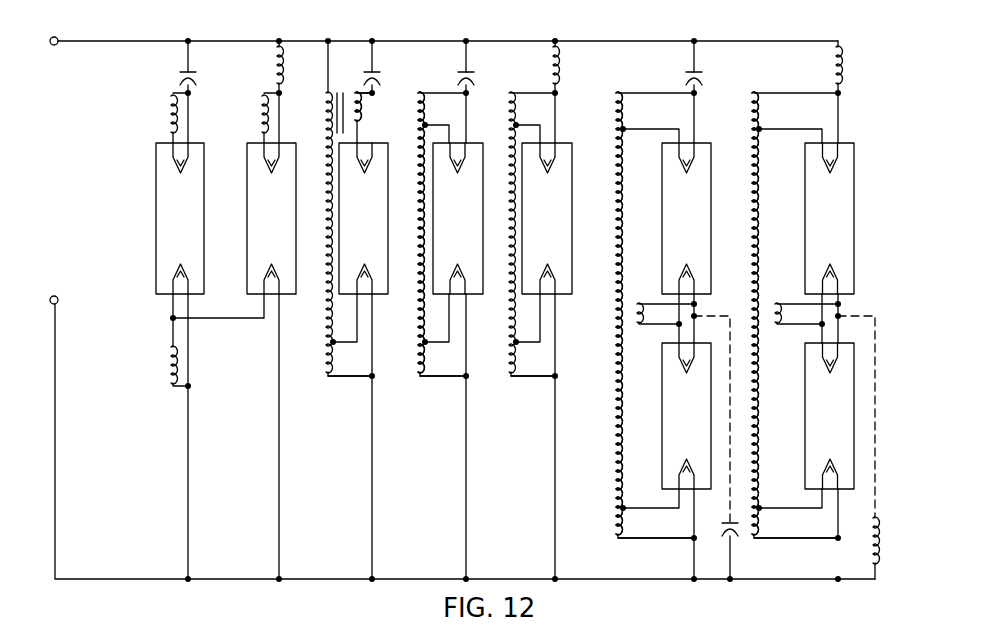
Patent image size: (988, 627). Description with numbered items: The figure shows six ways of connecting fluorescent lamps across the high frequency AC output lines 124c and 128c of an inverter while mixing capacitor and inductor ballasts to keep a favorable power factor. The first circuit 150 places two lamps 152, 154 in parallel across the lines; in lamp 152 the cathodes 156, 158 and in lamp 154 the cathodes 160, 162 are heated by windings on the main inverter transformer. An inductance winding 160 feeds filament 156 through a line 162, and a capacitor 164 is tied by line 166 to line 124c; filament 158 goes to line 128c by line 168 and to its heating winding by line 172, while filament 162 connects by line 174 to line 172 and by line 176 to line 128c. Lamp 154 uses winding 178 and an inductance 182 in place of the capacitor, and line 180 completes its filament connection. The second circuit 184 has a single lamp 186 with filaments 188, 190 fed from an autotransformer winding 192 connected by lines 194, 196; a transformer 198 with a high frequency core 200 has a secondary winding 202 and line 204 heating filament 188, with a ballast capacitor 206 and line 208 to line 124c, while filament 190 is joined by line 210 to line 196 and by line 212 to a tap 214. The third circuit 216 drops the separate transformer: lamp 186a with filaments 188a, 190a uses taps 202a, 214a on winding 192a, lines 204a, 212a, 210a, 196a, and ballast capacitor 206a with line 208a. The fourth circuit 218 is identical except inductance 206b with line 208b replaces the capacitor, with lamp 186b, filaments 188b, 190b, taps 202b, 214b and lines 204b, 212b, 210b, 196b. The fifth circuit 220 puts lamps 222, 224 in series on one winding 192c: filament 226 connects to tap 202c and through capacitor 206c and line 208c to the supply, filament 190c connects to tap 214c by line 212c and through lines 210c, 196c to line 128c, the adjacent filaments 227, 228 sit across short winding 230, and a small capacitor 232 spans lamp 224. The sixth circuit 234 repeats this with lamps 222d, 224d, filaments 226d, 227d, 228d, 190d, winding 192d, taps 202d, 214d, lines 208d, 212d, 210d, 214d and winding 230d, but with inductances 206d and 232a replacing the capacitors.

The high frequency AC output line 124c is at (95, 41).
The high frequency AC output line 128c is at (148, 579).
The first circuit 150 is at (238, 585).
The fluorescent lamp 152 is at (156, 197).
The fluorescent lamp 154 is at (247, 225).
The cathode 156 is at (183, 174).
The cathode 158 is at (192, 256).
The inductance winding 160 is at (168, 112).
The line 162 is at (192, 110).
The capacitor 164 is at (188, 77).
The line 166 is at (188, 57).
The line 168 is at (188, 458).
The line 172 is at (170, 317).
The line 174 is at (206, 320).
The line 176 is at (279, 405).
The winding 178 is at (261, 106).
The conductor 180 is at (284, 106).
The inductance 182 is at (280, 70).
The second circuit 184 is at (358, 497).
The fluorescent lamp 186 is at (381, 226).
The filament 188 is at (378, 190).
The filament 190 is at (378, 252).
The autotransformer winding 192 is at (332, 320).
The line 194 is at (326, 40).
The line 196 is at (372, 484).
The transformer 198 is at (339, 70).
The high frequency core 200 is at (345, 90).
The winding 202 is at (361, 97).
The line 204 is at (362, 112).
The ballast capacitor 206 is at (377, 73).
The line 208 is at (376, 55).
The line 210 is at (373, 352).
The line 212 is at (357, 319).
The tap 214 is at (345, 378).
The third circuit 216 is at (452, 497).
The line 208a is at (469, 55).
The ballast capacitor 206a is at (470, 72).
The line 204a is at (469, 108).
The tap 202a is at (428, 123).
The fluorescent lamp 186a is at (480, 226).
The filament 188a is at (478, 190).
The filament 190a is at (478, 252).
The line 212a is at (449, 319).
The line 210a is at (459, 350).
The tap 214a is at (427, 347).
The autotransformer winding 192a is at (420, 380).
The line 196a is at (466, 463).
The fourth circuit 218 is at (546, 497).
The line 208b is at (559, 42).
The ballast inductance 206b is at (560, 65).
The line 204b is at (558, 117).
The tap 202b is at (518, 123).
The fluorescent lamp 186b is at (569, 226).
The filament 188b is at (567, 190).
The filament 190b is at (567, 252).
The line 212b is at (540, 319).
The line 210b is at (556, 362).
The tap 214b is at (516, 347).
The line 196b is at (556, 484).
The fifth circuit 220 is at (681, 555).
The line 208c is at (692, 60).
The capacitor 206c is at (700, 74).
The tap 202c is at (626, 128).
The fluorescent lamp 222 is at (700, 221).
The filament 226 is at (698, 186).
The filament 227 is at (698, 251).
The short winding 230 is at (657, 336).
The filament 228 is at (689, 376).
The fluorescent lamp 224 is at (705, 430).
The filament 190c is at (704, 451).
The line 212c is at (679, 501).
The line 210c is at (693, 523).
The tap 214c is at (621, 540).
The line 196c is at (696, 562).
The filament transformer winding 192c is at (613, 408).
The small capacitor 232 is at (728, 522).
The sixth circuit 234 is at (832, 590).
The line 208d is at (834, 51).
The inductance 206d is at (845, 66).
The tap 202d is at (762, 128).
The fluorescent lamp 222d is at (854, 217).
The filament 226d is at (833, 177).
The filament 227d is at (833, 268).
The short winding 230d is at (798, 337).
The filament 228d is at (848, 388).
The fluorescent lamp 224d is at (848, 428).
The filament 190d is at (844, 451).
The line 212d is at (819, 501).
The line 210d is at (836, 520).
The tap 214d is at (758, 540).
The inductor 232a is at (883, 545).
The filament transformer winding 192d is at (756, 221).